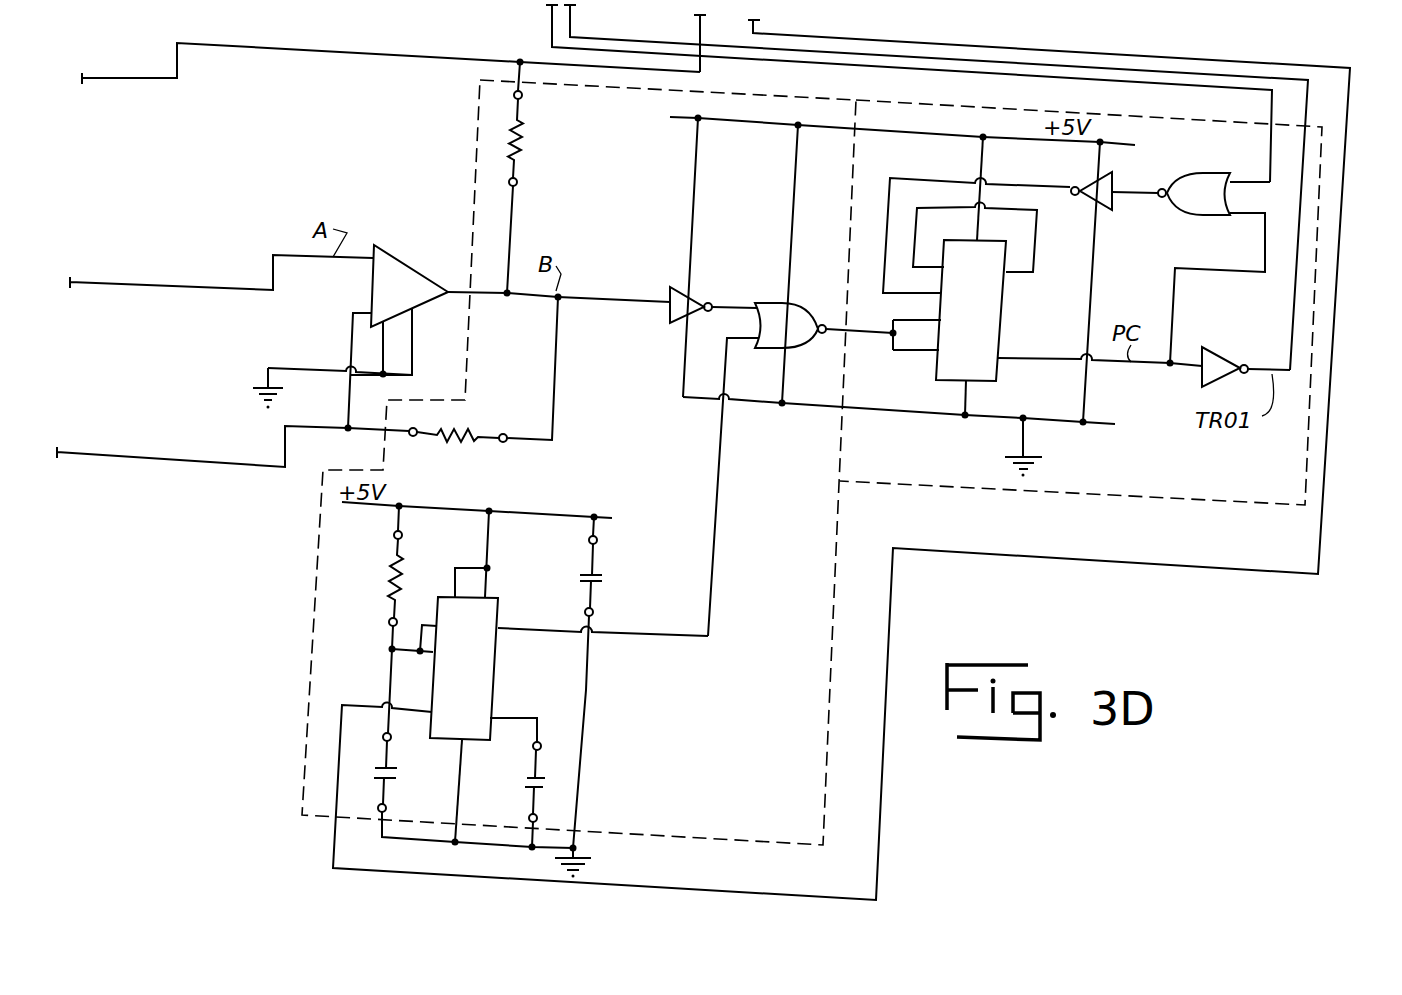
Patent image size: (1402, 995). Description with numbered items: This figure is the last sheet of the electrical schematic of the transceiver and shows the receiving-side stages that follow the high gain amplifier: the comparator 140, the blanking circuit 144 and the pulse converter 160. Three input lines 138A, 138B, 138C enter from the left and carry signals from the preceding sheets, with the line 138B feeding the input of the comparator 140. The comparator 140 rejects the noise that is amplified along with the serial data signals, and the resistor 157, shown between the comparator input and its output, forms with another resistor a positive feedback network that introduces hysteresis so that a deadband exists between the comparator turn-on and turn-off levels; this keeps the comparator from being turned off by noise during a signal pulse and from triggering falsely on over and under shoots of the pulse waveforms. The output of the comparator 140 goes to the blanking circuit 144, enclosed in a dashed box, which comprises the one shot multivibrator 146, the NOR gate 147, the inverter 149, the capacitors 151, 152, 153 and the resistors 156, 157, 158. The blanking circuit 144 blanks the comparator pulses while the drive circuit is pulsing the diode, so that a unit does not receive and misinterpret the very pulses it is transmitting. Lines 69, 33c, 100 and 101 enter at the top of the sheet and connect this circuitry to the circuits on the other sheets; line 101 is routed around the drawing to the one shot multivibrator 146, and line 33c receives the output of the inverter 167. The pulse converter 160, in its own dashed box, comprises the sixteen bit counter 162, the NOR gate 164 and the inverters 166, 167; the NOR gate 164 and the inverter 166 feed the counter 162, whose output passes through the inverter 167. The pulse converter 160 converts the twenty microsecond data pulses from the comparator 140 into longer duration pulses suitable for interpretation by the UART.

The input line 138A is at (267, 46).
The input line 138B is at (192, 262).
The input line 138C is at (165, 458).
The comparator 140 is at (396, 250).
The resistor 156 is at (526, 140).
The resistor 157 is at (480, 442).
The inverter 149 is at (687, 286).
The NOR gate 147 is at (767, 302).
The blanking circuit 144 is at (748, 94).
The pulse converter 160 is at (948, 100).
The 16 bit counter 162 is at (1003, 291).
The inverter 166 is at (1106, 213).
The NOR gate 164 is at (1176, 215).
The inverter 167 is at (1220, 351).
The line 69 is at (551, 28).
The line 33c is at (641, 36).
The line 100 is at (699, 29).
The line 101 is at (775, 33).
The resistor 158 is at (401, 561).
The one shot multivibrator 146 is at (500, 606).
The capacitor 153 is at (601, 575).
The capacitor 151 is at (403, 761).
The capacitor 152 is at (530, 776).